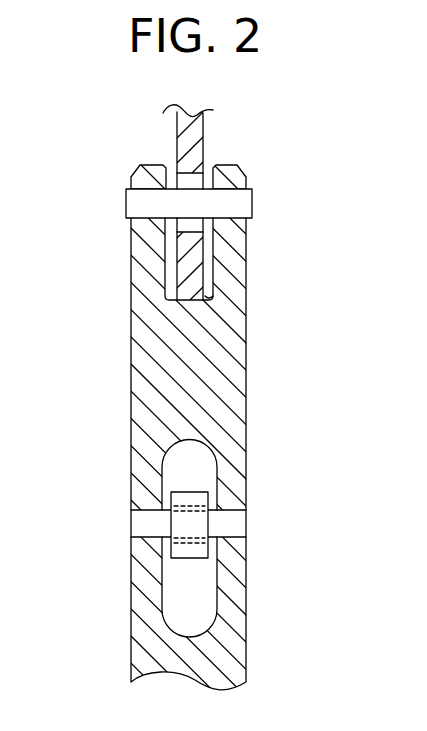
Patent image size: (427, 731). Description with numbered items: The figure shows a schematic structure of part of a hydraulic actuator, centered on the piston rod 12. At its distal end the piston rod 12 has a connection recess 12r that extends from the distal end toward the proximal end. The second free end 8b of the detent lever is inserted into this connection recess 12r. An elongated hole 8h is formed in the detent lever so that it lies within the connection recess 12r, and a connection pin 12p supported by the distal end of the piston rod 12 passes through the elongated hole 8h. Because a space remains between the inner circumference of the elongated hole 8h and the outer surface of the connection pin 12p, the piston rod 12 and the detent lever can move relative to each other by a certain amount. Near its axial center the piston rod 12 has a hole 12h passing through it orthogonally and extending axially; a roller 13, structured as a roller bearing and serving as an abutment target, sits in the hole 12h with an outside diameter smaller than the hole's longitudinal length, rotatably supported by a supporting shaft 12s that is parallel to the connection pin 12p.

The piston rod 12 is at (118, 394).
The connection pin 12p is at (140, 203).
The connection recess 12r is at (209, 293).
The supporting shaft 12s is at (152, 525).
The hole 12h is at (188, 593).
The roller 13 is at (188, 499).
The second free end 8b is at (192, 143).
The elongated hole 8h is at (185, 232).